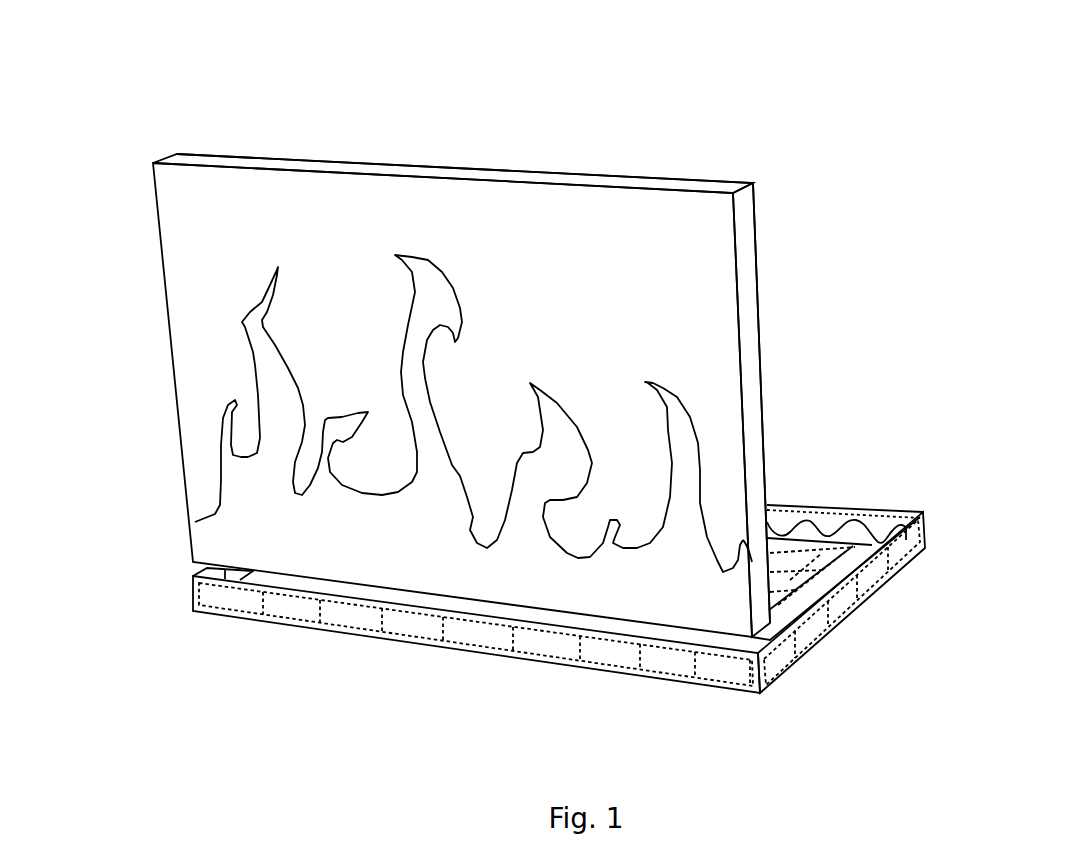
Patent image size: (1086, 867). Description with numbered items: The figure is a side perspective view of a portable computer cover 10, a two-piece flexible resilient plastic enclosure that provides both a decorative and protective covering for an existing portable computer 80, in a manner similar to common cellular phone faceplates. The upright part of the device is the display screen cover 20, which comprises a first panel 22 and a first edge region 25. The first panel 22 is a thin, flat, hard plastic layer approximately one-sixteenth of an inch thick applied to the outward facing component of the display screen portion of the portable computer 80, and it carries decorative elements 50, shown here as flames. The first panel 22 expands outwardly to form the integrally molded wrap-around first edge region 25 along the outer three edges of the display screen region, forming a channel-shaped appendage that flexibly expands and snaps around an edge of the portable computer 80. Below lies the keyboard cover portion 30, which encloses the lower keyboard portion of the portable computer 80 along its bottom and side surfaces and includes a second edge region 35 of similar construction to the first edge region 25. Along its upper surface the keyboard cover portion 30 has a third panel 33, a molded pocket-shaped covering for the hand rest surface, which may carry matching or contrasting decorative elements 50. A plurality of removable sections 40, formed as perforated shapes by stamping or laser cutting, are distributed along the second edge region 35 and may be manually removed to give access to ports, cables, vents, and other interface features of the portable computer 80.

The portable computer cover 10 is at (1010, 166).
The display screen cover 20 is at (161, 245).
The first panel 22 is at (185, 433).
The first edge region 25 is at (738, 252).
The decorative elements 50 is at (645, 382).
The keyboard cover portion 30 is at (888, 503).
The third panel 33 is at (921, 514).
The second edge region 35 is at (927, 544).
The removable sections 40 is at (828, 635).
The portable computer 80 is at (782, 552).